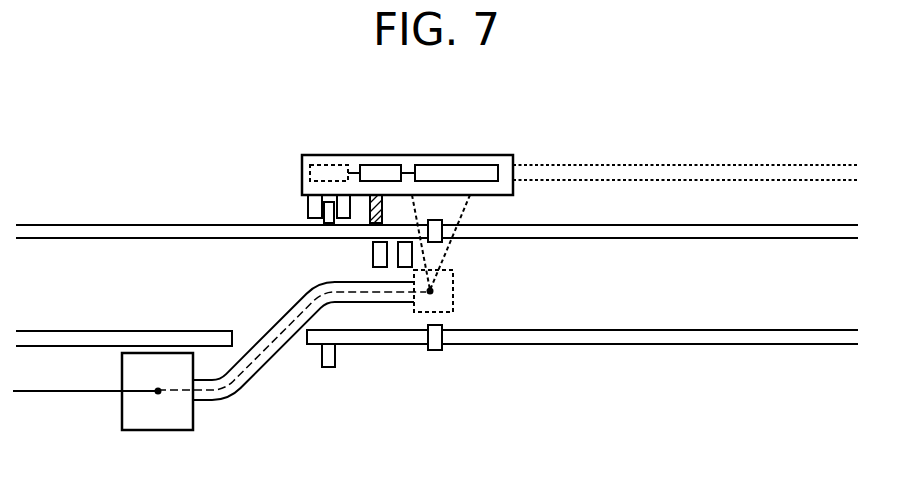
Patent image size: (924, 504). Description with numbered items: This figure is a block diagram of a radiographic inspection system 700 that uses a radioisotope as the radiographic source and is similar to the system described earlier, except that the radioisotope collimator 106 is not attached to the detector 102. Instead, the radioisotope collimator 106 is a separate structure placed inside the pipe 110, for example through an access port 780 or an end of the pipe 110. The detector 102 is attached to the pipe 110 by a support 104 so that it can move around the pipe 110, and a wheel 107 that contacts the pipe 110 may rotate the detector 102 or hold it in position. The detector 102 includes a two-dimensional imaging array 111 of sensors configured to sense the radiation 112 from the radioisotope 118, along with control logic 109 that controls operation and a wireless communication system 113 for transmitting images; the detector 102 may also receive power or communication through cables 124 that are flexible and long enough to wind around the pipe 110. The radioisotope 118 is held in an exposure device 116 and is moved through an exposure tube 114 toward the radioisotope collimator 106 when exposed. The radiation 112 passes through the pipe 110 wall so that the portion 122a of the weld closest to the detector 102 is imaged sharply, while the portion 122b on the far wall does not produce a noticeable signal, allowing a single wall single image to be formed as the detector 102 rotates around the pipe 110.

The radiographic inspection system 700 is at (223, 120).
The detector 102 is at (302, 175).
The support 104 is at (309, 208).
The radioisotope collimator 106 is at (453, 290).
The wheel 107 is at (365, 224).
The control logic 109 is at (376, 164).
The pipe 110 is at (168, 224).
The two-dimensional imaging array 111 is at (468, 164).
The radiation 112 is at (471, 214).
The wireless communication system 113 is at (333, 165).
The exposure tube 114 is at (352, 348).
The exposure device 116 is at (225, 432).
The radioisotope 118 is at (158, 391).
The portion of the weld 122a is at (442, 236).
The portion of the weld 122b is at (442, 338).
The cables 124 is at (638, 165).
The access port 780 is at (244, 320).